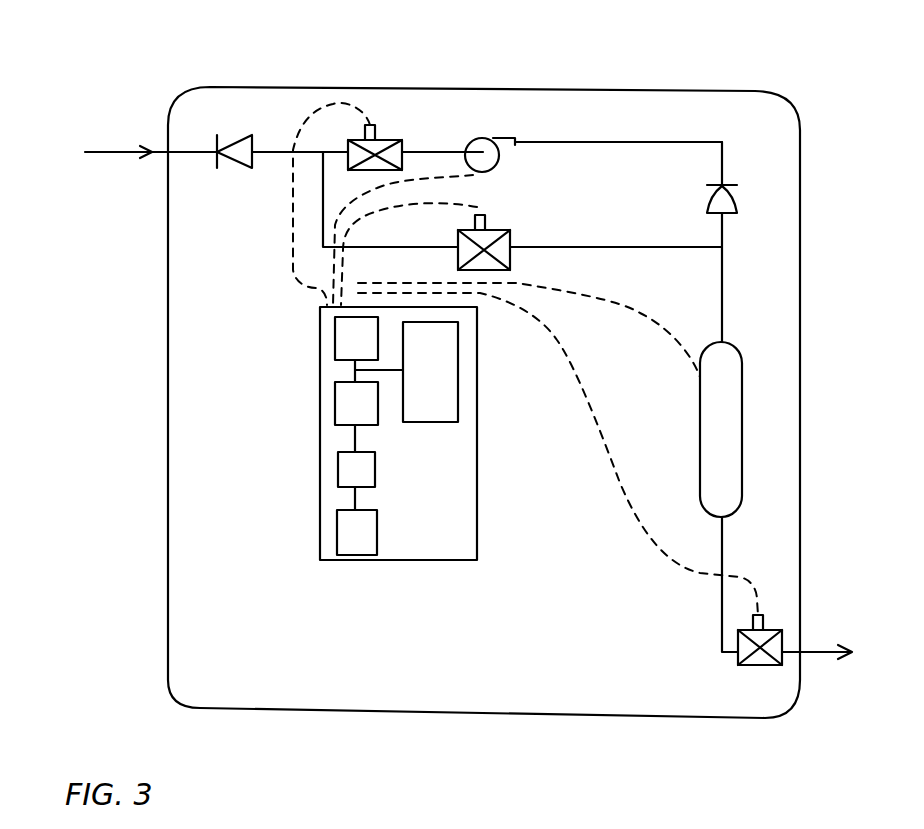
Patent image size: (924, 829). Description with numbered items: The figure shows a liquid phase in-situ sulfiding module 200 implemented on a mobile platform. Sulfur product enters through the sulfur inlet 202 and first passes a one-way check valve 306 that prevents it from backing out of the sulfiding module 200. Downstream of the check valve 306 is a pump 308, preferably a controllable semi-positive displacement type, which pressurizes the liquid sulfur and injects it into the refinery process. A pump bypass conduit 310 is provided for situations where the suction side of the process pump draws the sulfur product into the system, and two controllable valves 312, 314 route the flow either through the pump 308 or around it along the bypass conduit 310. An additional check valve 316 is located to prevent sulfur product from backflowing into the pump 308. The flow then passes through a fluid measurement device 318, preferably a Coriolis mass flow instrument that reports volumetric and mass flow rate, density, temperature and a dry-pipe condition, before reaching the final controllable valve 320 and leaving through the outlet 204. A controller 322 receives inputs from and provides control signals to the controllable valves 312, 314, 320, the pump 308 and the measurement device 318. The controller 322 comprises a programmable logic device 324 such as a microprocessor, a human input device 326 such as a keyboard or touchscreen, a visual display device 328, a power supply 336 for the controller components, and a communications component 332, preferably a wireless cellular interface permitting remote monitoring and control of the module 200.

The sulfiding module 200 is at (688, 80).
The sulfur inlet 202 is at (93, 152).
The outlet 204 is at (817, 643).
The check valve 306 is at (232, 130).
The pump 308 is at (482, 140).
The pump bypass conduit 310 is at (323, 210).
The controllable valve 312 is at (390, 137).
The controllable valve 314 is at (503, 233).
The check valve 316 is at (738, 192).
The fluid measurement device 318 is at (732, 425).
The controllable valve 320 is at (772, 632).
The controller 322 is at (450, 540).
The programmable logic device 324 is at (338, 332).
The human input device 326 is at (335, 403).
The visual display device 328 is at (447, 397).
The communications component 332 is at (343, 478).
The power supply 336 is at (350, 545).